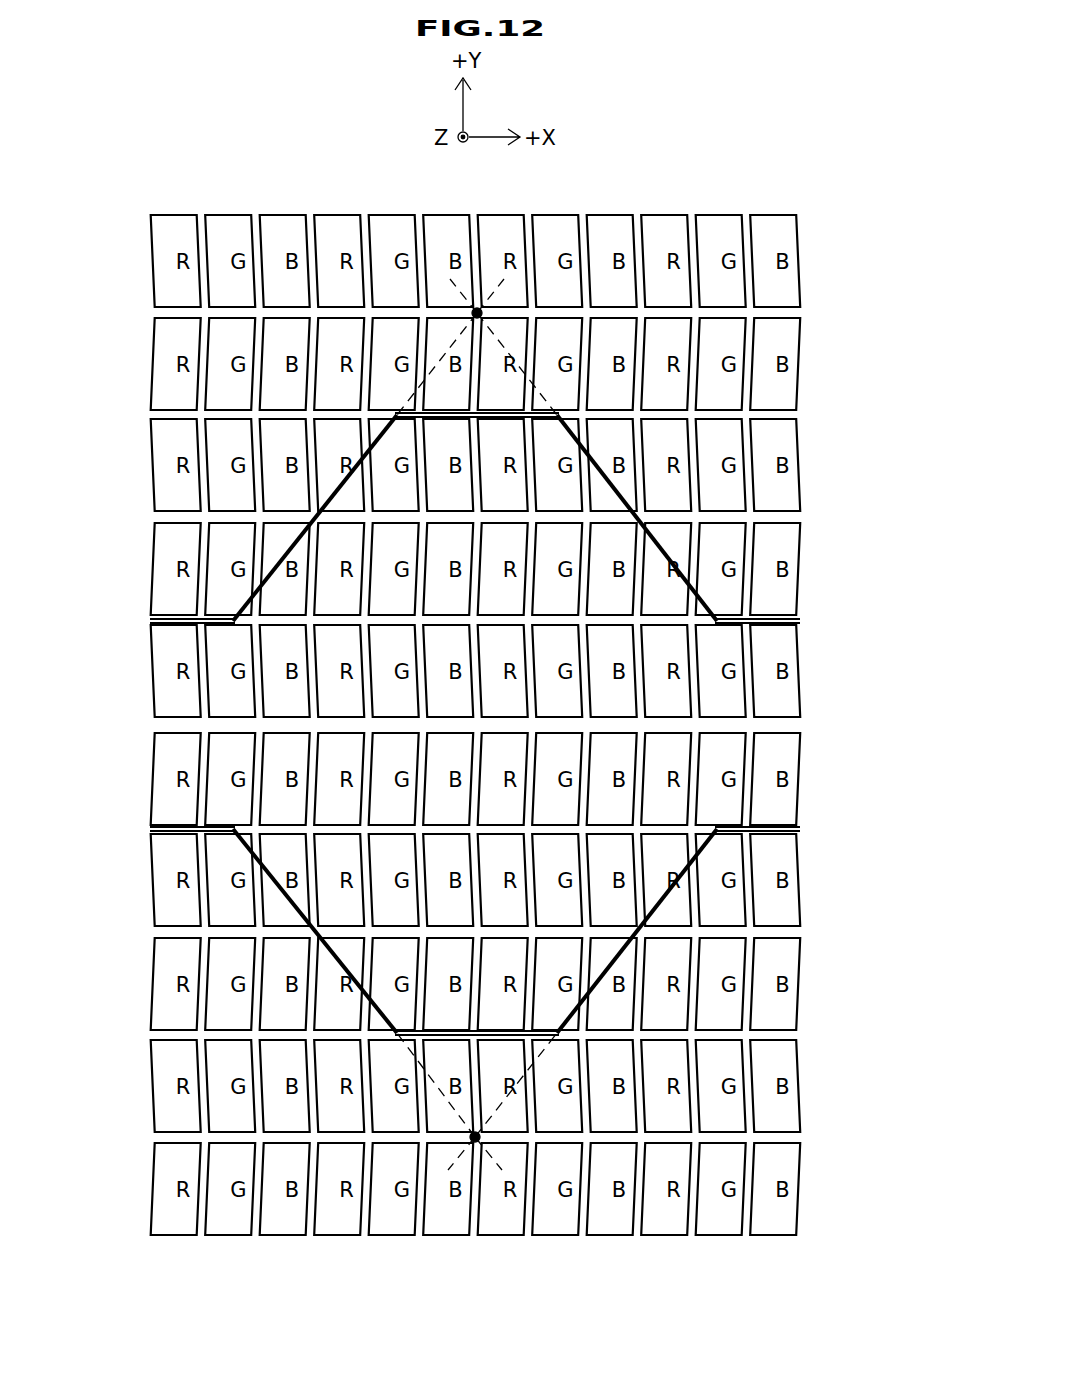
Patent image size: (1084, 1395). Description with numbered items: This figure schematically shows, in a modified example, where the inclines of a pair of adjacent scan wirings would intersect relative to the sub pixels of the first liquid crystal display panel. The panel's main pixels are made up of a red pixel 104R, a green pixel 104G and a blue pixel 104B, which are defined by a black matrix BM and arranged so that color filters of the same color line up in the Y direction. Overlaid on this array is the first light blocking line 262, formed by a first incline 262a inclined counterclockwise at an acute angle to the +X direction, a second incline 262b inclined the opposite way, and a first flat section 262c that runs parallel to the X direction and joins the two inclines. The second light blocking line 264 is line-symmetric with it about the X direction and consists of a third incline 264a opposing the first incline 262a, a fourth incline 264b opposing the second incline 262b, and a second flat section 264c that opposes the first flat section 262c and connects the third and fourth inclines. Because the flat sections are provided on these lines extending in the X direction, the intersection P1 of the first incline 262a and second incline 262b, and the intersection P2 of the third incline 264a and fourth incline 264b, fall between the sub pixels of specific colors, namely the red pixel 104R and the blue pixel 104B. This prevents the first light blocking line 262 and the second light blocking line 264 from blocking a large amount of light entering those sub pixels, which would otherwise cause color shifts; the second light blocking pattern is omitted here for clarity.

The red pixel 104R is at (167, 212).
The green pixel 104G is at (235, 212).
The blue pixel 104B is at (300, 212).
The black matrix BM is at (158, 311).
The intersection P1 is at (477, 312).
The intersection P2 is at (475, 1137).
The first light blocking line 262 is at (798, 622).
The first incline 262a is at (315, 521).
The second incline 262b is at (640, 523).
The first flat section 262c is at (530, 413).
The second light blocking line 264 is at (798, 830).
The third incline 264a is at (315, 933).
The fourth incline 264b is at (640, 932).
The second flat section 264c is at (188, 827).